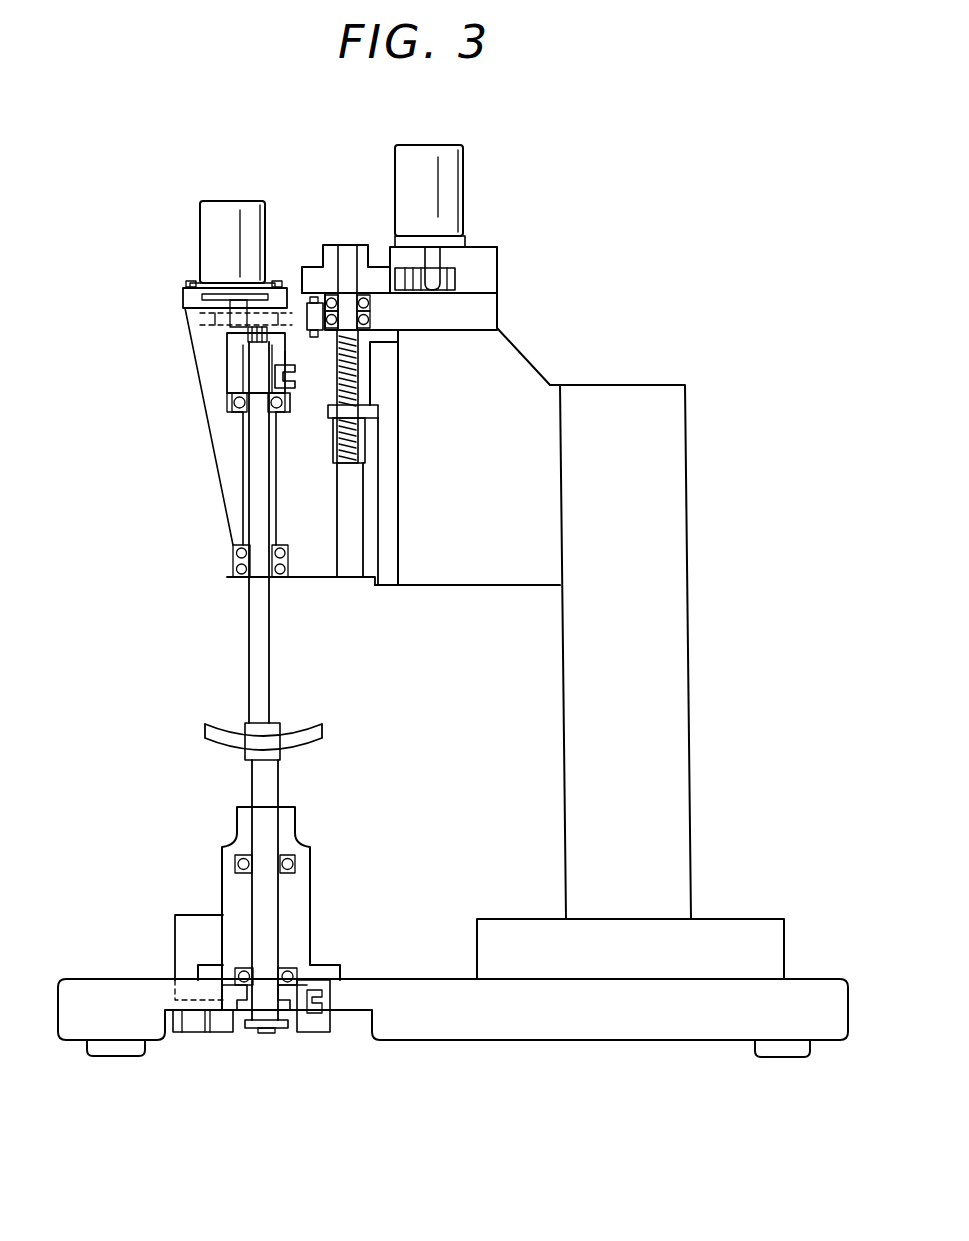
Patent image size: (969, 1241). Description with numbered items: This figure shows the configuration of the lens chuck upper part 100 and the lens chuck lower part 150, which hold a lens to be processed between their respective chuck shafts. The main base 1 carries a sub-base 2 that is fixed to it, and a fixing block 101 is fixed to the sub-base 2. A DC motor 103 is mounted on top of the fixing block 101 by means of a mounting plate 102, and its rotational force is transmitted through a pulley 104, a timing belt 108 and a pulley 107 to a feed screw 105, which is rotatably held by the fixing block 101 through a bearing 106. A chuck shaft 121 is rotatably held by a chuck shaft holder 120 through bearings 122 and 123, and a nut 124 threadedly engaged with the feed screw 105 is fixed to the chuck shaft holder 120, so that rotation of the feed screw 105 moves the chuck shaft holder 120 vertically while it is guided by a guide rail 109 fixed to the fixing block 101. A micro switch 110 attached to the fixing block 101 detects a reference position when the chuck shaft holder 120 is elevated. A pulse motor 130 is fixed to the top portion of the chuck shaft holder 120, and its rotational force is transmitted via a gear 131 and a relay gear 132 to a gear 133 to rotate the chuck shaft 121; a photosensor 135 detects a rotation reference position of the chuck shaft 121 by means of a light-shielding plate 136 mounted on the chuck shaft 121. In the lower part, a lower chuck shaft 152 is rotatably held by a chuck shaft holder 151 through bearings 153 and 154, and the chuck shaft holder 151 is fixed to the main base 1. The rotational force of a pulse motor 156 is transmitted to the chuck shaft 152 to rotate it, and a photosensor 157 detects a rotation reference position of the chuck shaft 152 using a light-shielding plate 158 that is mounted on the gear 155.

The main base 1 is at (563, 1010).
The sub-base 2 is at (689, 777).
The lens chuck upper part 100 is at (150, 180).
The fixing block 101 is at (517, 375).
The mounting plate 102 is at (487, 282).
The DC motor 103 is at (447, 163).
The pulley 104 is at (446, 262).
The feed screw 105 is at (365, 368).
The bearing 106 is at (370, 318).
The pulley 107 is at (332, 247).
The timing belt 108 is at (392, 264).
The guide rail 109 is at (387, 507).
The micro switch 110 is at (303, 303).
The chuck shaft holder 120 is at (318, 574).
The chuck shaft 121 is at (253, 490).
The bearing 122 is at (232, 398).
The bearing 123 is at (233, 565).
The nut 124 is at (372, 412).
The pulse motor 130 is at (230, 257).
The gear 131 is at (202, 312).
The relay gear 132 is at (203, 322).
The gear 133 is at (225, 360).
The photosensor 135 is at (294, 390).
The light-shielding plate 136 is at (227, 384).
The lens chuck lower part 150 is at (122, 770).
The chuck shaft holder 151 is at (230, 885).
The lower chuck shaft 152 is at (265, 787).
The bearing 153 is at (296, 858).
The bearing 154 is at (290, 965).
The gear 155 is at (230, 1018).
The pulse motor 156 is at (190, 920).
The photosensor 157 is at (313, 1014).
The light-shielding plate 158 is at (292, 1031).